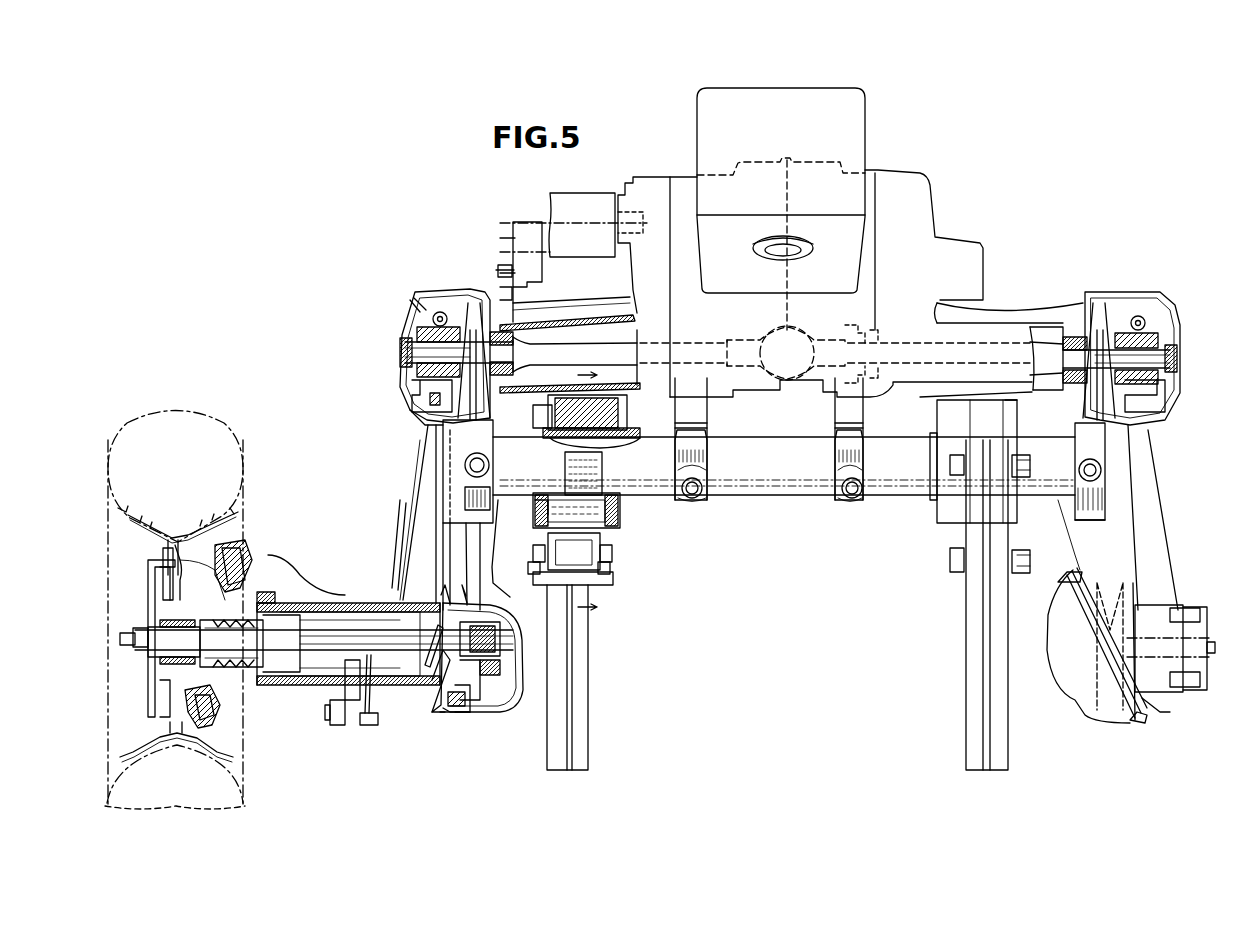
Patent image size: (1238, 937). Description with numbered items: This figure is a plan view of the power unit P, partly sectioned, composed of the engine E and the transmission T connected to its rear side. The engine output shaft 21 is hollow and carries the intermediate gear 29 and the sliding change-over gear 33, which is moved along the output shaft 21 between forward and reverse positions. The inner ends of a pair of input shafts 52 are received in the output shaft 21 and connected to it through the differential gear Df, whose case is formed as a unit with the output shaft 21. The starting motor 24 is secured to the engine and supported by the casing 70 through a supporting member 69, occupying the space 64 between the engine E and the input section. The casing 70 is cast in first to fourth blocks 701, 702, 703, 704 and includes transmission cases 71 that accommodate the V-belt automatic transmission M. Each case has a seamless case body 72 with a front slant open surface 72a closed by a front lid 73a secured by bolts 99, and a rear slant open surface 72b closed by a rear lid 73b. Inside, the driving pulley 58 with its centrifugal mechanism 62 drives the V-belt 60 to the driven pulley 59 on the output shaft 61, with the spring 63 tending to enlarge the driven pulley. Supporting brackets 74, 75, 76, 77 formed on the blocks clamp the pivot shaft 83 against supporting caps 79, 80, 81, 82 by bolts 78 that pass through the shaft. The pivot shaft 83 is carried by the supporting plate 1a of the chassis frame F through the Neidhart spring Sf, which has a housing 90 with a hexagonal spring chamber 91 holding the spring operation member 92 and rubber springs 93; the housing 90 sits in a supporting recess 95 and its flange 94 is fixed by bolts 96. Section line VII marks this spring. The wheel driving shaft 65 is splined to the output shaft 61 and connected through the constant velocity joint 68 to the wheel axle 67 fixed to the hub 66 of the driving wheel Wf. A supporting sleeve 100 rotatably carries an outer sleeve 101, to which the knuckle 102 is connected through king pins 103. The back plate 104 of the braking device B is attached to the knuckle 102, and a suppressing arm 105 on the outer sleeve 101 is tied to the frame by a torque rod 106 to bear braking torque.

The engine E is at (874, 129).
The power unit P is at (868, 75).
The casing 70 is at (649, 166).
The second block 702 is at (683, 180).
The third block 703 is at (880, 165).
The fourth block 704 is at (985, 328).
The starting motor 24 is at (535, 230).
The supporting member 69 is at (497, 275).
The space 64 is at (607, 282).
The first block 701 is at (553, 323).
The input shaft 52 is at (563, 360).
The output shaft 21 is at (908, 350).
The differential gear Df is at (812, 318).
The change-over gear 33 is at (858, 325).
The intermediate gear 29 is at (885, 325).
The section line VII is at (603, 493).
The transmission T is at (426, 276).
The centrifugal mechanism 62 is at (423, 307).
The driving pulley 58 is at (448, 300).
The front lid 73a is at (403, 327).
The slant open surface 72a is at (417, 418).
The automatic transmission M is at (416, 453).
The case body 72 is at (428, 458).
The transmission case 71 is at (415, 488).
The supporting bracket 74 is at (478, 512).
The supporting cap 79 is at (468, 494).
The bolt 78 is at (489, 465).
The pivot shaft 83 is at (763, 480).
The supporting bracket 75 is at (700, 412).
The supporting bracket 76 is at (834, 405).
The supporting cap 80 is at (700, 460).
The supporting cap 81 is at (838, 462).
The spring operation member 92 is at (612, 495).
The housing 90 is at (613, 525).
The rubber spring 93 is at (620, 520).
The spring chamber 91 is at (545, 520).
The supporting recess 95 is at (548, 538).
The Neidhart spring Sf is at (634, 535).
The flange 94 is at (594, 565).
The bolt 96 is at (536, 578).
The supporting plate 1a is at (588, 650).
The chassis frame F is at (543, 774).
The rear lid 73b is at (512, 640).
The output shaft 61 is at (392, 645).
The spring 63 is at (502, 677).
The driven pulley 59 is at (470, 700).
The V-belt 60 is at (457, 708).
The slant open surface 72b is at (440, 712).
The torque rod 106 is at (400, 528).
The suppressing arm 105 is at (345, 712).
The supporting sleeve 100 is at (300, 604).
The outer sleeve 101 is at (297, 604).
The constant velocity joint 68 is at (226, 668).
The wheel driving shaft 65 is at (270, 672).
The hub 66 is at (140, 626).
The wheel axle 67 is at (130, 647).
The braking device B is at (150, 565).
The driving wheel Wf is at (155, 410).
The knuckle 102 is at (185, 572).
The back plate 104 is at (178, 552).
The king pin 103 is at (240, 540).
The supporting cap 82 is at (1077, 455).
The supporting bracket 77 is at (1090, 521).
The bolt 99 is at (1080, 575).